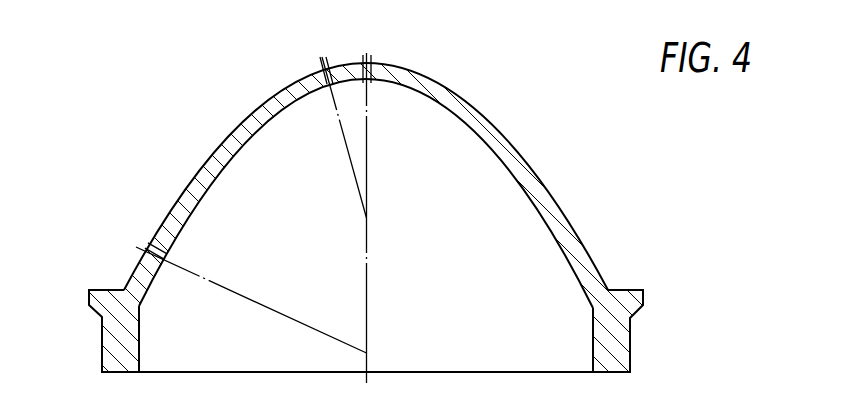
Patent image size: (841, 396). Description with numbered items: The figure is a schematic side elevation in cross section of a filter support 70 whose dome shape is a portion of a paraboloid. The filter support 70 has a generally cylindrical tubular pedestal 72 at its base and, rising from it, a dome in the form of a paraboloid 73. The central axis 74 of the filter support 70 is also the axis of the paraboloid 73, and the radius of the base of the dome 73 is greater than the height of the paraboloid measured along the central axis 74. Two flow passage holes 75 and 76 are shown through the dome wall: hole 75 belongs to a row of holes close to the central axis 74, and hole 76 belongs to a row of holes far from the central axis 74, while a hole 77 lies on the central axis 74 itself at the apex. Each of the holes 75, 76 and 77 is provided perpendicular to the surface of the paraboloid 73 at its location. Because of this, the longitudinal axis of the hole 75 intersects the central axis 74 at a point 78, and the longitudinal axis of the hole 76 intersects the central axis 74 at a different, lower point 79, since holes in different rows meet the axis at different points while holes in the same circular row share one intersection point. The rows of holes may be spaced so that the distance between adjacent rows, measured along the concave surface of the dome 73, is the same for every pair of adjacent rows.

The filter support 70 is at (504, 103).
The tubular pedestal 72 is at (108, 343).
The paraboloid dome 73 is at (573, 245).
The central axis 74 is at (368, 121).
The flow passage hole 75 is at (320, 70).
The flow passage hole 76 is at (158, 250).
The apex hole 77 is at (374, 66).
The intersection point 78 is at (371, 215).
The intersection point 79 is at (371, 349).